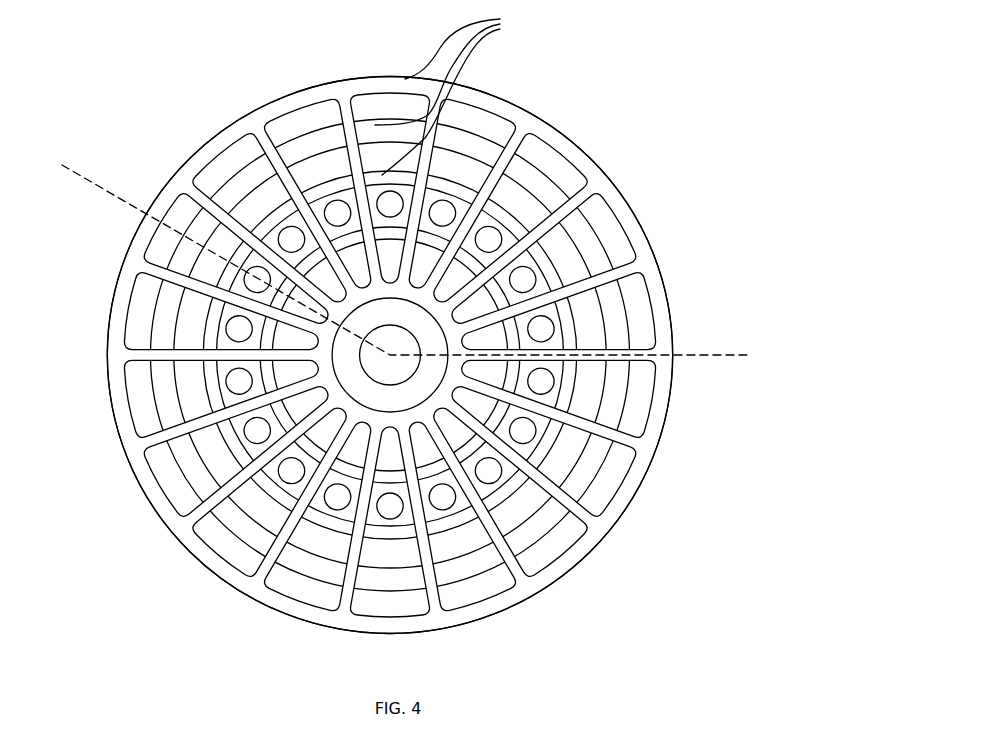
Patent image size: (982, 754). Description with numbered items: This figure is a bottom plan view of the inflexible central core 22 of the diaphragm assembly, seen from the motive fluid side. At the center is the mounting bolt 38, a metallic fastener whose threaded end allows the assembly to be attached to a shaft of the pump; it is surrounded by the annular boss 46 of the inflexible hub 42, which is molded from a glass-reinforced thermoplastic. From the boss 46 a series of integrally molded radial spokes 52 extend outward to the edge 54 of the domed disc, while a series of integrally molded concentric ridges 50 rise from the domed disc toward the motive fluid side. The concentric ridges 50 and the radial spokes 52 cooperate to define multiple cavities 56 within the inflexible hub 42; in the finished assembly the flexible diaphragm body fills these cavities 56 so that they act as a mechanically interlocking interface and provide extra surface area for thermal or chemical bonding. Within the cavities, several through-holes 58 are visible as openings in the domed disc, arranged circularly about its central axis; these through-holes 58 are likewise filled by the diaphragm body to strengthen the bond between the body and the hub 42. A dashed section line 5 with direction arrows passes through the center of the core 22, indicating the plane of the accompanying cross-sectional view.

The section line 5 is at (80, 173).
The inflexible central core 22 is at (438, 323).
The mounting bolt 38 is at (385, 348).
The inflexible hub 42 is at (647, 442).
The annular boss 46 is at (355, 383).
The concentric ridges 50 is at (453, 94).
The radial spokes 52 is at (287, 93).
The edge of the domed disc 54 is at (637, 482).
The cavities 56 is at (388, 255).
The through-holes 58 is at (503, 237).